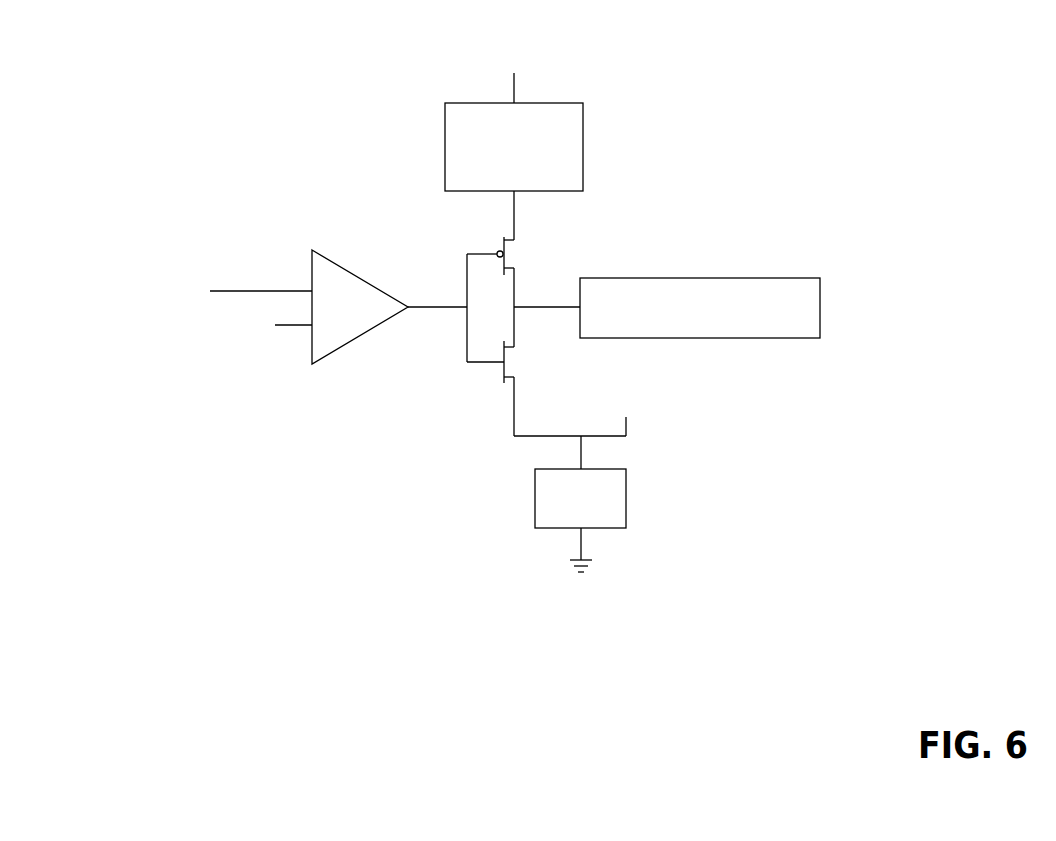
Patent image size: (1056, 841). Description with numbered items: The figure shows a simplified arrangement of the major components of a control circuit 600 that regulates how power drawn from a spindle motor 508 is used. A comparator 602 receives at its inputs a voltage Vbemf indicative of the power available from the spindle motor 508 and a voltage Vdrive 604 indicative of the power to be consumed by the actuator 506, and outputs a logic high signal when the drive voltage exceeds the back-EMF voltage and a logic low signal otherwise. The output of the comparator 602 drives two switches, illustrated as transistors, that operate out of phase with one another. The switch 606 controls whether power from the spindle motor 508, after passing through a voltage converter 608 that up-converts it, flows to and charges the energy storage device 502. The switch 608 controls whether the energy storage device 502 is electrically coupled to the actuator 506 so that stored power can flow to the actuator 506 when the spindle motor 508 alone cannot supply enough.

The energy storage device 502 is at (683, 302).
The actuator 506 is at (564, 494).
The spindle motor 508 is at (193, 286).
The control circuit 600 is at (695, 123).
The comparator 602 is at (343, 316).
The voltage Vdrive 604 is at (265, 325).
The switch 606 is at (555, 265).
The voltage converter / switch 608 is at (498, 131).